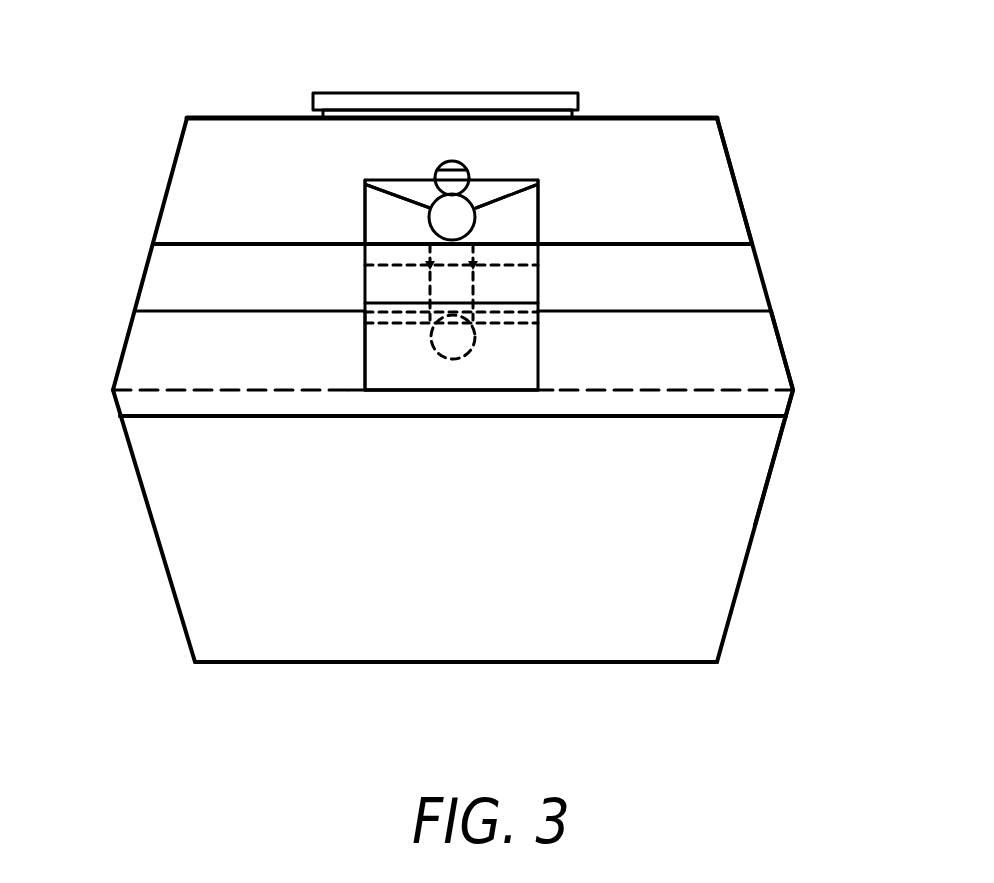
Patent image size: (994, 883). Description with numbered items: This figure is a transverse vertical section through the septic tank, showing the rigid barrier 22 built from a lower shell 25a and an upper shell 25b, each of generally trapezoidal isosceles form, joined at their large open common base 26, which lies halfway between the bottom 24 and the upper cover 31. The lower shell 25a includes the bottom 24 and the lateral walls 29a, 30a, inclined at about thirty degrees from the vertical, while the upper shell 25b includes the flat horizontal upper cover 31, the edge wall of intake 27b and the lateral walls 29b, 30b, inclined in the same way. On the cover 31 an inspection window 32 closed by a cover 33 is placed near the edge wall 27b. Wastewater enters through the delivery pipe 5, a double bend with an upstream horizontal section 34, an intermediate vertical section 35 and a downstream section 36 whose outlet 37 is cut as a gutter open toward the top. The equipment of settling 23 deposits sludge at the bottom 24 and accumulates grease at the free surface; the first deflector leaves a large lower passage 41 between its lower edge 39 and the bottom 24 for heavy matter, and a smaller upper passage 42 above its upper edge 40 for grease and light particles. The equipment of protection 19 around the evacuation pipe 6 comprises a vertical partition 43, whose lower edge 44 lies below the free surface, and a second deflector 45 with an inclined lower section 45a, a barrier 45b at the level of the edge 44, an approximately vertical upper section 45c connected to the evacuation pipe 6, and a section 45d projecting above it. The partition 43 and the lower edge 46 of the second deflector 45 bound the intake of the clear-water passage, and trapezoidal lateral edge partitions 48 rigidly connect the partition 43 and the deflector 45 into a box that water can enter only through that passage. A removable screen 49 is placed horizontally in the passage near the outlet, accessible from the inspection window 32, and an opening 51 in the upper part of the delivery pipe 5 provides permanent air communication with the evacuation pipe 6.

The delivery pipe 5 is at (476, 152).
The evacuation pipe 6 is at (428, 222).
The equipment of protection 19 is at (545, 190).
The rigid barrier 22 is at (723, 115).
The equipment of settling 23 is at (747, 354).
The bottom 24 is at (578, 662).
The lower shell 25a is at (765, 500).
The upper shell 25b is at (760, 277).
The large open common base 26 is at (753, 388).
The edge wall of intake 27b is at (692, 222).
The lateral wall 29a is at (742, 577).
The lateral wall 29b is at (732, 175).
The lateral wall 30a is at (165, 562).
The lateral wall 30b is at (167, 182).
The upper cover 31 is at (230, 117).
The inspection window 32 is at (555, 102).
The cover 33 is at (348, 103).
The upstream horizontal section 34 is at (470, 172).
The intermediate vertical section 35 is at (543, 288).
The downstream section 36 is at (515, 395).
The outlet 37 is at (513, 393).
The lower edge 39 is at (568, 417).
The upper edge 40 is at (744, 308).
The lower passage 41 is at (478, 555).
The upper passage 42 is at (212, 293).
The vertical partition 43 is at (545, 217).
The lower edge 44 is at (543, 343).
The second deflector 45 is at (398, 365).
The lower section 45a is at (427, 377).
The barrier 45b is at (392, 302).
The upper section 45c is at (380, 210).
The section 45d is at (400, 186).
The lower edge 46 is at (462, 390).
The lateral edge partition 48 is at (363, 248).
The screen 49 is at (543, 224).
The opening 51 is at (447, 160).